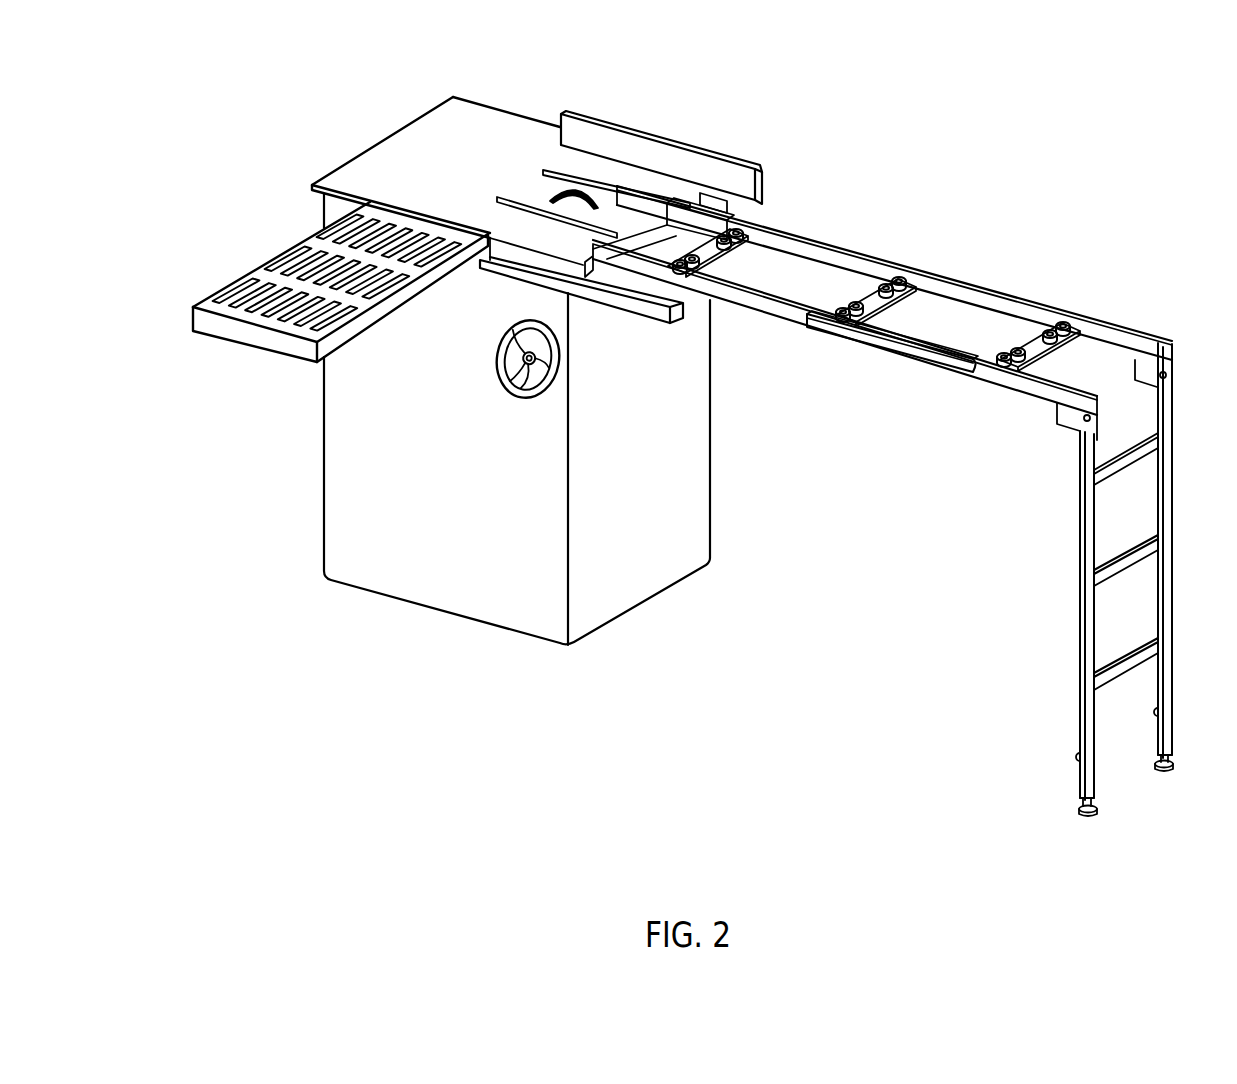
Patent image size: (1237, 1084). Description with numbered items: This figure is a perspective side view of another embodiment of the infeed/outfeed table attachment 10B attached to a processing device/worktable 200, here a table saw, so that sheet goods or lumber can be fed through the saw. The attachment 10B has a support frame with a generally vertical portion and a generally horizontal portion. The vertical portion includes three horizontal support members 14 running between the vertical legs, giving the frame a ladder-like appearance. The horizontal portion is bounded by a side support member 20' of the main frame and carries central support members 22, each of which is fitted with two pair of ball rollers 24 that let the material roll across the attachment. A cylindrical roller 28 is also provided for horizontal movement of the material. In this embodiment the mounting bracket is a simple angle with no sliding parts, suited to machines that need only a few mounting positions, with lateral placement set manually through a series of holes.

The processing device/worktable 200 is at (770, 96).
The infeed/outfeed table attachment 10B is at (1207, 812).
The horizontal support members 14 is at (1142, 460).
The central support members 22 is at (740, 258).
The ball rollers 24 is at (1037, 378).
The cylindrical roller 28 is at (892, 351).
The front rail 20' is at (788, 320).